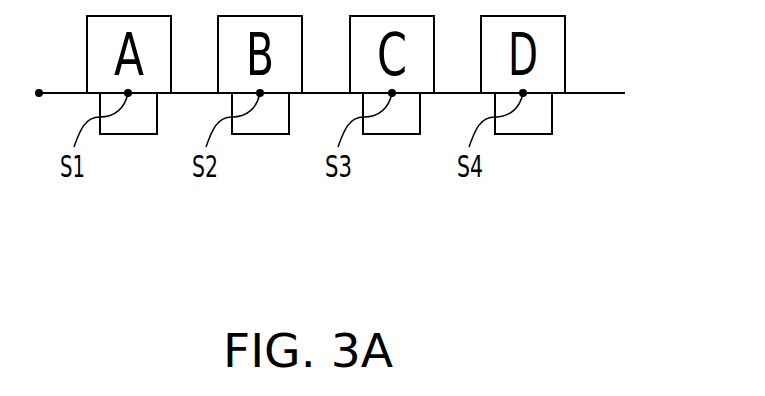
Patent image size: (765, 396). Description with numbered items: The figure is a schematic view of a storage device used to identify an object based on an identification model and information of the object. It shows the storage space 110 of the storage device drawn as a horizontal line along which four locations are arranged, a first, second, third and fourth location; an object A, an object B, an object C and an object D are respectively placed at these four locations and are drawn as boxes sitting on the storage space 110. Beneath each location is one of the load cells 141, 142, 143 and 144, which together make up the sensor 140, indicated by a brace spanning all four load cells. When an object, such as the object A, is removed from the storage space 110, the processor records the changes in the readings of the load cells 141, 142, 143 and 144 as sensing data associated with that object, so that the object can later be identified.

The storage space 110 is at (598, 93).
The sensor 140 is at (326, 189).
The load cell 141 is at (127, 135).
The load cell 142 is at (258, 135).
The load cell 143 is at (390, 135).
The load cell 144 is at (523, 157).